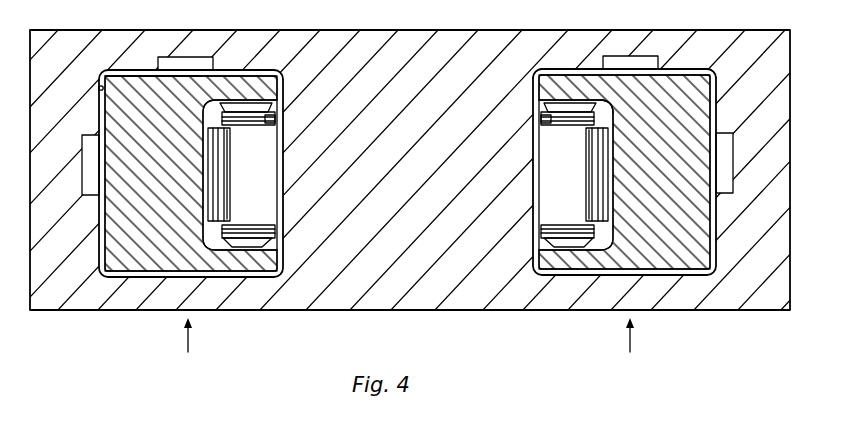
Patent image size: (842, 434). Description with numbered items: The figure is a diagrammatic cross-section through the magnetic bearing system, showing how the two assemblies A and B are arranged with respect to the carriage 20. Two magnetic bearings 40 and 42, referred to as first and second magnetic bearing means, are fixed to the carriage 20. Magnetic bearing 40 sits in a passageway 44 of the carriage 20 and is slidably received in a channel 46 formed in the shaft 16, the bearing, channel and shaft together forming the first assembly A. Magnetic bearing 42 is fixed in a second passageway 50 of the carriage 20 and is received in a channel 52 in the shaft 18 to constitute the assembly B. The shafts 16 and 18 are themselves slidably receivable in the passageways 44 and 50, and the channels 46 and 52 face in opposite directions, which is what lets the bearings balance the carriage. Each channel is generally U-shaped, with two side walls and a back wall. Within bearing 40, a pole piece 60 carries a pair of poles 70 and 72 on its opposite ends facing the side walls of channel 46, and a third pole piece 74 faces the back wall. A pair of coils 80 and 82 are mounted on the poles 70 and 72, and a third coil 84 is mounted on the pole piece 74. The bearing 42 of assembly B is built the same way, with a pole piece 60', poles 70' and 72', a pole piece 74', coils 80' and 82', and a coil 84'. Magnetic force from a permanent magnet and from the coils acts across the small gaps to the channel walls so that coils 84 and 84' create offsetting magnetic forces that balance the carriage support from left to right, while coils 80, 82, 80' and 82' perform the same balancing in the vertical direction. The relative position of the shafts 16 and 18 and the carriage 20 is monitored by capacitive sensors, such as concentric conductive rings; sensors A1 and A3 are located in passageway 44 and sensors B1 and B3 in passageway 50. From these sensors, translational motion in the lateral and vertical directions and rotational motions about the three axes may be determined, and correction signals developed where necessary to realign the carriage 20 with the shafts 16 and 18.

The carriage 20 is at (359, 31).
The magnetic bearing 40 is at (294, 149).
The magnetic bearing 42 is at (514, 152).
The shaft 16 is at (163, 174).
The shaft 18 is at (673, 174).
The passageway 44 is at (99, 86).
The channel 46 is at (158, 80).
The passageway 50 is at (717, 72).
The channel 52 is at (614, 106).
The pole piece 60 is at (240, 175).
The pole piece 60' is at (576, 175).
The pole 70 is at (257, 290).
The pole 70' is at (575, 290).
The pole 72 is at (246, 57).
The pole 72' is at (551, 57).
The third pole piece 74 is at (236, 174).
The third pole piece 74' is at (578, 174).
The coil 80 is at (248, 284).
The coil 80' is at (564, 284).
The coil 82 is at (260, 64).
The coil 82' is at (567, 64).
The third coil 84 is at (245, 174).
The third coil 84' is at (569, 174).
The first assembly A is at (188, 350).
The assembly B is at (630, 350).
The sensor A1 is at (84, 195).
The sensor A3 is at (190, 57).
The sensor B1 is at (733, 193).
The sensor B3 is at (624, 55).